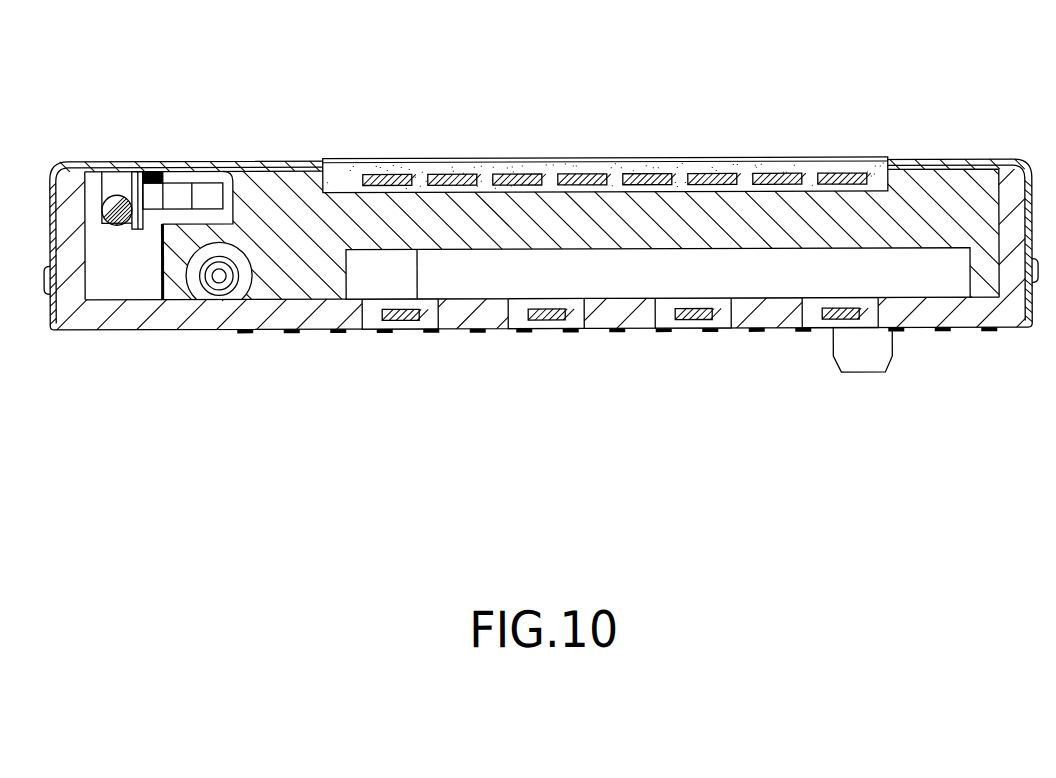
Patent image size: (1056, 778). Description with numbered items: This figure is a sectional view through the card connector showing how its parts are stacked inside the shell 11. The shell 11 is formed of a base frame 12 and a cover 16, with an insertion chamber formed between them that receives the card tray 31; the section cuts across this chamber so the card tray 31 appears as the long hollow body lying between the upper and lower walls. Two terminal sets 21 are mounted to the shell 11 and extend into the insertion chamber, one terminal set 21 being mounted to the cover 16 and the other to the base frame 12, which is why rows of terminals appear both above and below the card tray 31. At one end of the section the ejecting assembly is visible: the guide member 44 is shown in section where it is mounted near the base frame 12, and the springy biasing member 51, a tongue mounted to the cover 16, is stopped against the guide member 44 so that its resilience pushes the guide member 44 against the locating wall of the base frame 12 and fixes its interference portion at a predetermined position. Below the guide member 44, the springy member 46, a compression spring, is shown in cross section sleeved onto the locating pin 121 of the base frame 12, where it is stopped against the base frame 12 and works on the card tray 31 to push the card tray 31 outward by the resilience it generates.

The shell 11 is at (958, 157).
The base frame 12 is at (742, 330).
The cover 16 is at (917, 158).
The terminal sets 21 is at (776, 160).
The card tray 31 is at (365, 254).
The guide member 44 is at (116, 194).
The springy member 46 is at (191, 289).
The springy biasing member 51 is at (143, 202).
The locating pin 121 is at (219, 280).